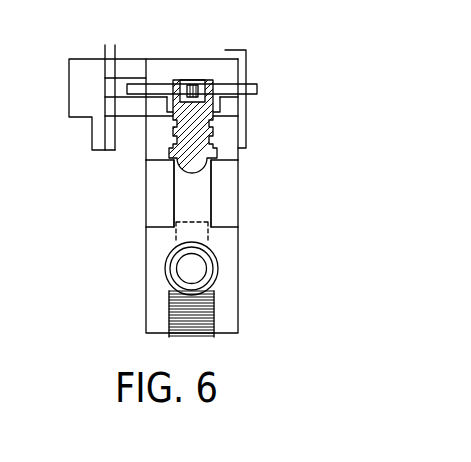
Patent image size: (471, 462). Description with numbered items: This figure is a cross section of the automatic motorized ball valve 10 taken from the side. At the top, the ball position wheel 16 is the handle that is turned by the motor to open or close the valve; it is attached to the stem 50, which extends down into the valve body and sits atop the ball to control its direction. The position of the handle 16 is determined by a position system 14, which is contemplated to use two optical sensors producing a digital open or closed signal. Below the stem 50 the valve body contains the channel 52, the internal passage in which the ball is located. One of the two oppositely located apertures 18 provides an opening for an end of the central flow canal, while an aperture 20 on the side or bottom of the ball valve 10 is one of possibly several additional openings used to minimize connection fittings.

The automatic motorized ball valve 10 is at (282, 113).
The position system 14 is at (80, 90).
The ball position wheel 16 is at (155, 87).
The aperture 18 is at (212, 201).
The aperture 20 is at (201, 268).
The stem 50 is at (205, 160).
The channel 52 is at (178, 203).